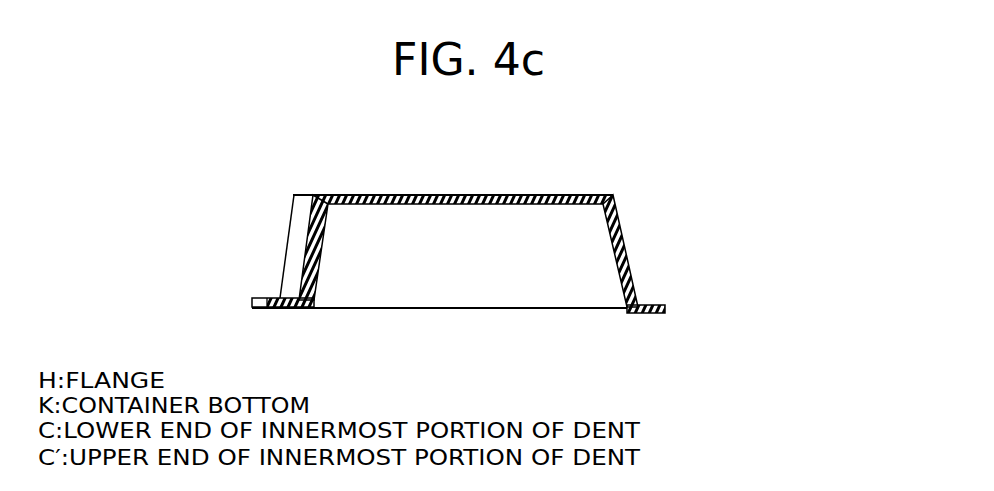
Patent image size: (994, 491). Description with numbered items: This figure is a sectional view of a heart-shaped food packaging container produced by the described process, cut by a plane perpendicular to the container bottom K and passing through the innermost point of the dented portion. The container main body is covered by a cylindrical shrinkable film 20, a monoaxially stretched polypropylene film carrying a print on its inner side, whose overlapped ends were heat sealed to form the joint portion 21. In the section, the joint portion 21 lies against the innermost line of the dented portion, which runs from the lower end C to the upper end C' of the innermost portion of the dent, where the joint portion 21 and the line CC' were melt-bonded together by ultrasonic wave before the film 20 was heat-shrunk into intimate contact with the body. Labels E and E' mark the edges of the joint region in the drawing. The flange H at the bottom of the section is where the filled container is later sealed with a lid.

The cylindrical shrinkable film 20 is at (628, 252).
The joint portion of shrinkable film 21 is at (308, 243).
The flange H is at (282, 308).
The container bottom K is at (472, 196).
The lower end of innermost portion of dent C is at (340, 166).
The upper end of innermost portion of dent C' is at (327, 335).
The upper edge of joint portion E is at (263, 178).
The lower edge of joint portion E' is at (244, 277).